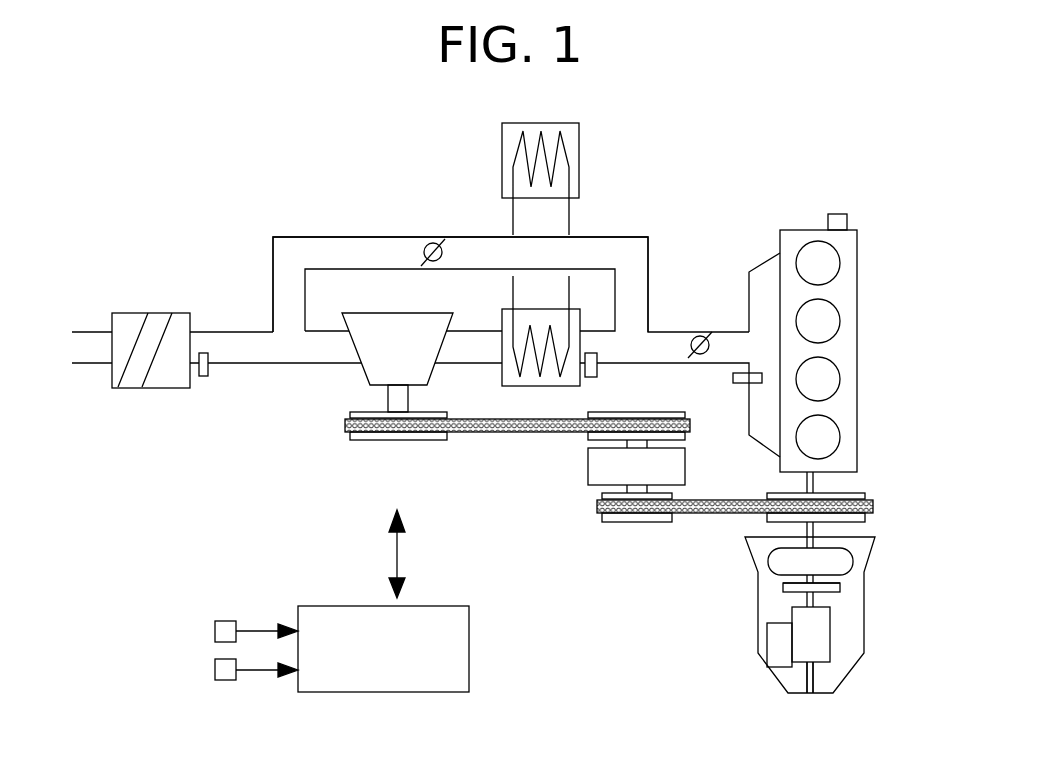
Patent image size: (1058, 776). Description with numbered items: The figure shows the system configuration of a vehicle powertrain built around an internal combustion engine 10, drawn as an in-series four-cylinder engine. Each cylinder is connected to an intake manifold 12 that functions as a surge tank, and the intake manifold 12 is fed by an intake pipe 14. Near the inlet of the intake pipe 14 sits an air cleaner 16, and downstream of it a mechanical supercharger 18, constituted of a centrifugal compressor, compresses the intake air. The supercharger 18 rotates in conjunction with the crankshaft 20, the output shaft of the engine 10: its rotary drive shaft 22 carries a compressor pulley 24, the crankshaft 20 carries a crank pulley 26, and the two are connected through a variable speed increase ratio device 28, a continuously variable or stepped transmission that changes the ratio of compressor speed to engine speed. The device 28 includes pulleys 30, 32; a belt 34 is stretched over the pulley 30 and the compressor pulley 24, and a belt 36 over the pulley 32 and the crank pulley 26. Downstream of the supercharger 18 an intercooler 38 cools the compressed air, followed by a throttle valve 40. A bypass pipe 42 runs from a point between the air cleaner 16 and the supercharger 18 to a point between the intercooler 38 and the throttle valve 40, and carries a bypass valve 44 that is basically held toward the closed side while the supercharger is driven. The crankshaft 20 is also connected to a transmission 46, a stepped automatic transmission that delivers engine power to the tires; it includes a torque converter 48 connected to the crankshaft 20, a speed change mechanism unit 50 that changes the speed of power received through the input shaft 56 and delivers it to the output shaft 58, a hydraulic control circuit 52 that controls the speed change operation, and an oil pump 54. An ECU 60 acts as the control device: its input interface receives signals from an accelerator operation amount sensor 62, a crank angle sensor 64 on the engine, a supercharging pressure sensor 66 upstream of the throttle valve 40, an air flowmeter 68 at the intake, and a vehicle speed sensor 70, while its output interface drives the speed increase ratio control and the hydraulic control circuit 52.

The internal combustion engine 10 is at (857, 290).
The intake manifold 12 is at (765, 256).
The intake pipe 14 is at (222, 332).
The air cleaner 16 is at (130, 312).
The mechanical supercharger 18 is at (387, 313).
The crankshaft 20 is at (815, 486).
The rotary drive shaft 22 is at (388, 400).
The compressor pulley 24 is at (355, 441).
The crank pulley 26 is at (865, 518).
The variable speed increase ratio device 28 is at (588, 468).
The pulley 30 is at (686, 412).
The pulley 32 is at (628, 523).
The belt 34 is at (470, 434).
The belt 36 is at (690, 515).
The intercooler 38 is at (580, 175).
The throttle valve 40 is at (702, 336).
The bypass pipe 42 is at (328, 236).
The bypass valve 44 is at (433, 242).
The transmission 46 is at (865, 558).
The torque converter 48 is at (843, 580).
The speed change mechanism unit 50 is at (830, 653).
The hydraulic control circuit 52 is at (767, 645).
The oil pump 54 is at (783, 582).
The input shaft 56 is at (820, 600).
The output shaft 58 is at (820, 677).
The ECU 60 is at (469, 648).
The accelerator operation amount sensor 62 is at (215, 628).
The crank angle sensor 64 is at (838, 212).
The supercharging pressure sensor 66 is at (600, 378).
The air flowmeter 68 is at (204, 378).
The vehicle speed sensor 70 is at (215, 675).